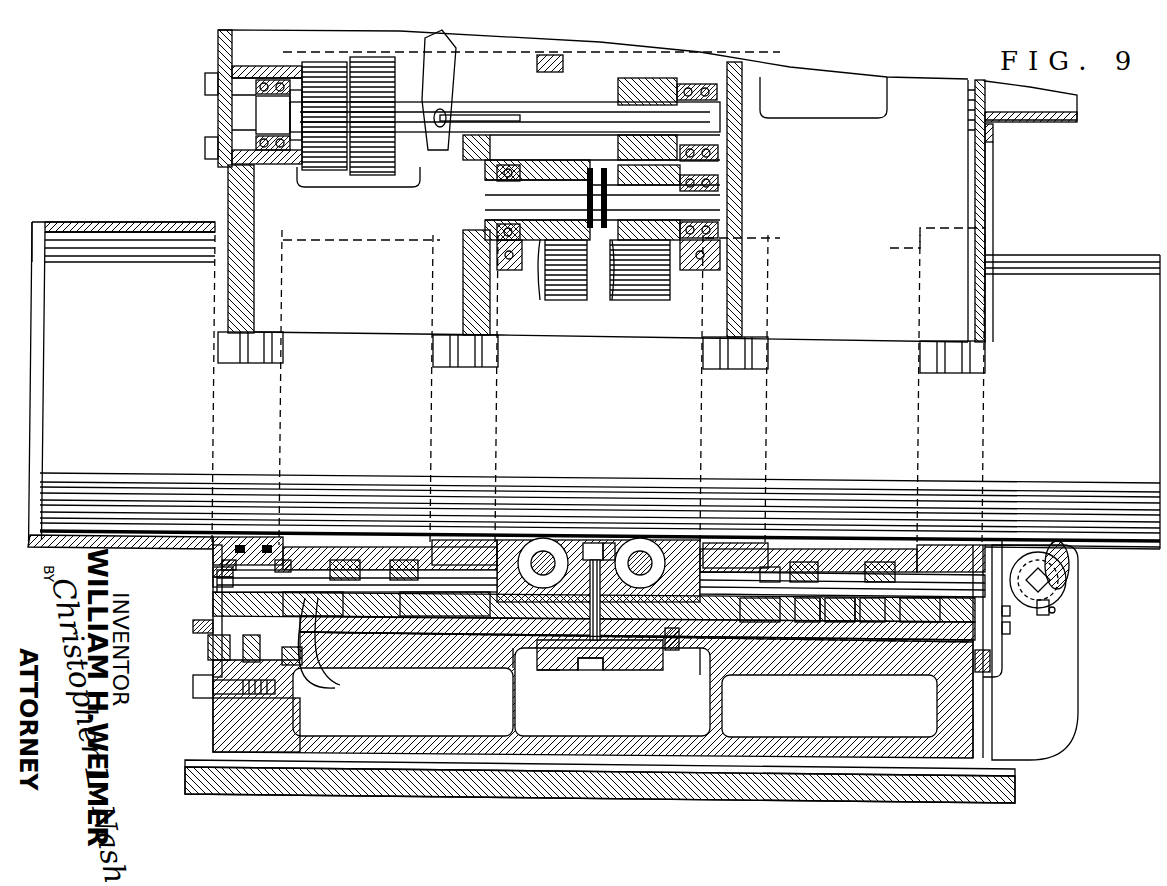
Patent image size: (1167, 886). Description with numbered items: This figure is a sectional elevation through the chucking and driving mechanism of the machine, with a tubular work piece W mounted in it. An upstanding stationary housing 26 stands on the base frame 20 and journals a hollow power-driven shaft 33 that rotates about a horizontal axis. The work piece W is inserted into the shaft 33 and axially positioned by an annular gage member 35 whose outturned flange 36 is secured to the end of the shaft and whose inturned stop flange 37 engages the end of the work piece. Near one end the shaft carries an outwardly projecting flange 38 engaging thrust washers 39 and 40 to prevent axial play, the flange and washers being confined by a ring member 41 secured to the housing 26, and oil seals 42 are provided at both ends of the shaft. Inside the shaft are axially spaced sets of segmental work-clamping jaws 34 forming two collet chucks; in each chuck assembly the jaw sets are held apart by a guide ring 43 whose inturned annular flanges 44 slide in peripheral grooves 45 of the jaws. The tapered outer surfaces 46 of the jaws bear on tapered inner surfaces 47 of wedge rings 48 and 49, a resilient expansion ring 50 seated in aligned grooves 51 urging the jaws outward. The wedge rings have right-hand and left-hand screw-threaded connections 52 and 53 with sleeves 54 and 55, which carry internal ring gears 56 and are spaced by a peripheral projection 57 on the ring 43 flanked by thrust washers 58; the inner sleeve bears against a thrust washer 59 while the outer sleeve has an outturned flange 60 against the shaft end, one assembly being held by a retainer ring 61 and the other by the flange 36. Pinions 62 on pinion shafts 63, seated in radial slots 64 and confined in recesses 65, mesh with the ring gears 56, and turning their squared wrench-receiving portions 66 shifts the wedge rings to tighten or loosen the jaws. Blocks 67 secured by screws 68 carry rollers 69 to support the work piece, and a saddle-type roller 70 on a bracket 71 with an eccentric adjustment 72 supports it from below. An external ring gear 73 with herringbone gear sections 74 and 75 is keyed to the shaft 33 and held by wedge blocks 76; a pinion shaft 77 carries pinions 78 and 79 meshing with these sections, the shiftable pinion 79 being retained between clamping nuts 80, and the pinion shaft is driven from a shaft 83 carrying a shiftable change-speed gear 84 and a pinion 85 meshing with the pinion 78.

The tubular work piece W is at (1085, 272).
The base frame 20 is at (1015, 795).
The stationary housing 26 is at (960, 720).
The hollow power-driven shaft 33 is at (515, 650).
The work-clamping jaws 34 is at (230, 350).
The gage member 35 is at (120, 222).
The outturned flange 36 is at (213, 612).
The inturned stop flange 37 is at (32, 240).
The outwardly projecting flange 38 is at (316, 663).
The thrust washer 39 is at (193, 684).
The thrust washer 40 is at (340, 672).
The ring member 41 is at (213, 716).
The oil seals 42 is at (208, 648).
The guide ring 43 is at (365, 548).
The inturned annular flanges 44 is at (283, 560).
The peripheral grooves 45 is at (267, 545).
The tapered outer surfaces 46 is at (213, 567).
The tapered inner surfaces 47 is at (213, 582).
The wedge ring 48 is at (193, 626).
The wedge ring 49 is at (460, 668).
The resilient expansion ring 50 is at (240, 545).
The aligned grooves 51 is at (229, 560).
The right-hand screw-threaded connection 52 is at (915, 642).
The left-hand screw-threaded connection 53 is at (763, 676).
The sleeve 54 is at (325, 625).
The sleeve 55 is at (440, 632).
The internal ring gears 56 is at (807, 642).
The peripheral projection 57 is at (840, 642).
The thrust washers 58 is at (844, 664).
The thrust washer 59 is at (700, 675).
The outturned flange 60 is at (1002, 617).
The retainer ring 61 is at (1002, 632).
The pinions 62 is at (822, 572).
The pinion shafts 63 is at (404, 560).
The radial slots 64 is at (795, 562).
The recesses 65 is at (770, 567).
The squared wrench-receiving portions 66 is at (1010, 560).
The blocks 67 is at (610, 543).
The screws 68 is at (592, 543).
The rollers 69 is at (543, 540).
The saddle-type roller 70 is at (1066, 568).
The bracket 71 is at (1063, 693).
The eccentric adjustment 72 is at (1062, 585).
The external ring gear 73 is at (592, 670).
The gear section 74 is at (630, 670).
The gear section 75 is at (555, 672).
The wedge blocks 76 is at (671, 652).
The pinion shaft 77 is at (712, 205).
The pinion 78 is at (740, 248).
The pinion 79 is at (560, 160).
The clamping nuts 80 is at (537, 336).
The shaft 83 is at (506, 102).
The change-speed gear 84 is at (362, 175).
The pinion 85 is at (640, 78).